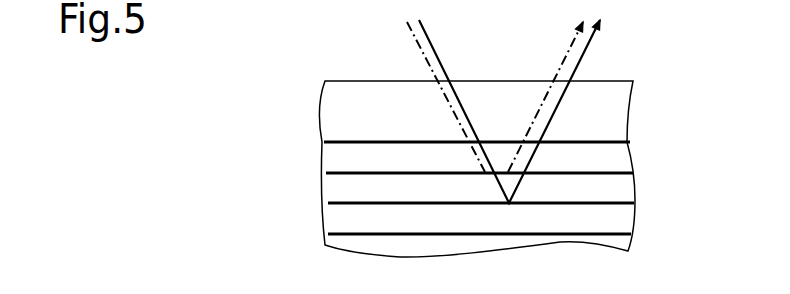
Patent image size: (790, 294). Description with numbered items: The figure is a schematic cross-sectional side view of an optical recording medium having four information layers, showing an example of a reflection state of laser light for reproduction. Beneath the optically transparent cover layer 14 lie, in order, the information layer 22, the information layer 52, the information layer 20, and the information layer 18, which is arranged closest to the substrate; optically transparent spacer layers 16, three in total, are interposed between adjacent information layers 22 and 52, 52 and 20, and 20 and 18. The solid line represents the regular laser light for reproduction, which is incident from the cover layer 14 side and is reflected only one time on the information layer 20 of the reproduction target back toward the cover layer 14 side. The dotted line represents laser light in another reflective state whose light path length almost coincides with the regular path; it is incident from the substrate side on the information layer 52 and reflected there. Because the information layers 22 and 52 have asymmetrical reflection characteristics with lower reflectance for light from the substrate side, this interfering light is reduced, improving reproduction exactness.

The cover layer 14 is at (630, 103).
The information layer 22 is at (628, 143).
The information layer 52 is at (633, 173).
The information layer 20 is at (635, 203).
The information layer 18 is at (630, 235).
The spacer layers 16 is at (325, 158).